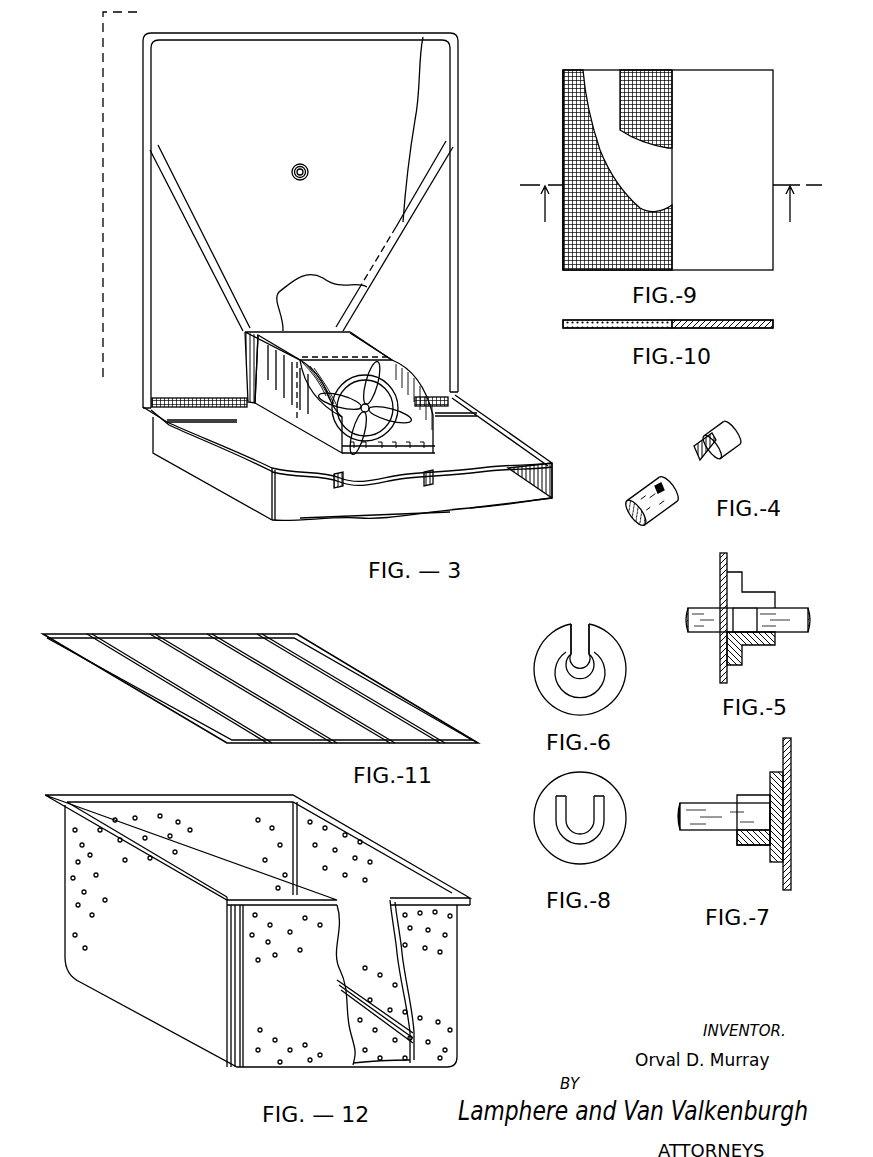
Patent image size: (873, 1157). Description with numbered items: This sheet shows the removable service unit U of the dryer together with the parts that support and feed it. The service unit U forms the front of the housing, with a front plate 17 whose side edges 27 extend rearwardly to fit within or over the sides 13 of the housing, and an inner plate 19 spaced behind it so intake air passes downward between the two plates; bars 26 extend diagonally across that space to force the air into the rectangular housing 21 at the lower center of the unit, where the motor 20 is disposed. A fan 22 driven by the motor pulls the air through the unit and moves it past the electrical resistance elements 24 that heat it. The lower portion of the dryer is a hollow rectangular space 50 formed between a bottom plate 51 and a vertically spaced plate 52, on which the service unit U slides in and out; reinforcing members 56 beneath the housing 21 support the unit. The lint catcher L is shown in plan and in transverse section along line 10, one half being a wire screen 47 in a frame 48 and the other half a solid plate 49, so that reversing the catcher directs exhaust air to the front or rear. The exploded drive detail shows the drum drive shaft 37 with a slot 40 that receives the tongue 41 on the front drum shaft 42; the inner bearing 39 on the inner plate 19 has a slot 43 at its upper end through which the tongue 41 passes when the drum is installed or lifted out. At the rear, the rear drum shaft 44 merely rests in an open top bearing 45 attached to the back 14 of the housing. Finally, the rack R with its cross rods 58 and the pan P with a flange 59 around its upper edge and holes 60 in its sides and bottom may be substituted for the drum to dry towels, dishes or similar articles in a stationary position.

In FIG. 3, the service unit U is at (140, 357).
In FIG. 3, the sides of housing 13 is at (250, 462).
In FIG. 7, the back of housing 14 is at (791, 812).
In FIG. 3, the front plate 17 is at (206, 335).
In FIG. 3, the inner plate 19 is at (243, 131).
In FIG. 5, the inner plate 19 is at (720, 658).
In FIG. 3, the motor 20 is at (342, 362).
In FIG. 3, the rectangular housing 21 is at (363, 344).
In FIG. 3, the fan 22 is at (396, 390).
In FIG. 3, the electrical resistance elements 24 is at (401, 450).
In FIG. 3, the bars 26 is at (197, 237).
In FIG. 3, the side edges of front plate 27 is at (152, 298).
In FIG. 4, the drum drive shaft 37 is at (663, 514).
In FIG. 5, the drum drive shaft 37 is at (704, 608).
In FIG. 3, the inner bearing 39 is at (309, 170).
In FIG. 5, the inner bearing 39 is at (753, 646).
In FIG. 6, the inner bearing 39 is at (628, 682).
In FIG. 4, the slot 40 is at (659, 485).
In FIG. 4, the tongue 41 is at (698, 462).
In FIG. 4, the front drum shaft 42 is at (738, 452).
In FIG. 5, the front drum shaft 42 is at (787, 608).
In FIG. 5, the slot 43 is at (755, 590).
In FIG. 6, the slot 43 is at (599, 607).
In FIG. 7, the rear drum shaft 44 is at (698, 803).
In FIG. 8, the open top bearing 45 is at (604, 815).
In FIG. 7, the open top bearing 45 is at (755, 845).
In FIG. 9, the wire screen 47 is at (655, 70).
In FIG. 10, the wire screen 47 is at (612, 306).
In FIG. 3, the frame 48 is at (148, 412).
In FIG. 9, the frame 48 is at (563, 104).
In FIG. 10, the frame 48 is at (562, 322).
In FIG. 9, the solid plate 49 is at (775, 118).
In FIG. 10, the solid plate 49 is at (755, 320).
In FIG. 3, the hollow rectangular space 50 is at (338, 514).
In FIG. 3, the bottom plate 51 is at (481, 500).
In FIG. 3, the vertically spaced plate 52 is at (474, 462).
In FIG. 3, the reinforcing members 56 is at (334, 484).
In FIG. 11, the cross rods 58 is at (138, 694).
In FIG. 12, the flange 59 is at (390, 843).
In FIG. 12, the holes 60 is at (272, 828).
In FIG. 3, the lint catcher L is at (240, 420).
In FIG. 11, the rack R is at (111, 621).
In FIG. 12, the pan P is at (143, 1026).
In FIG. 9, the section line 10— 10 is at (671, 203).